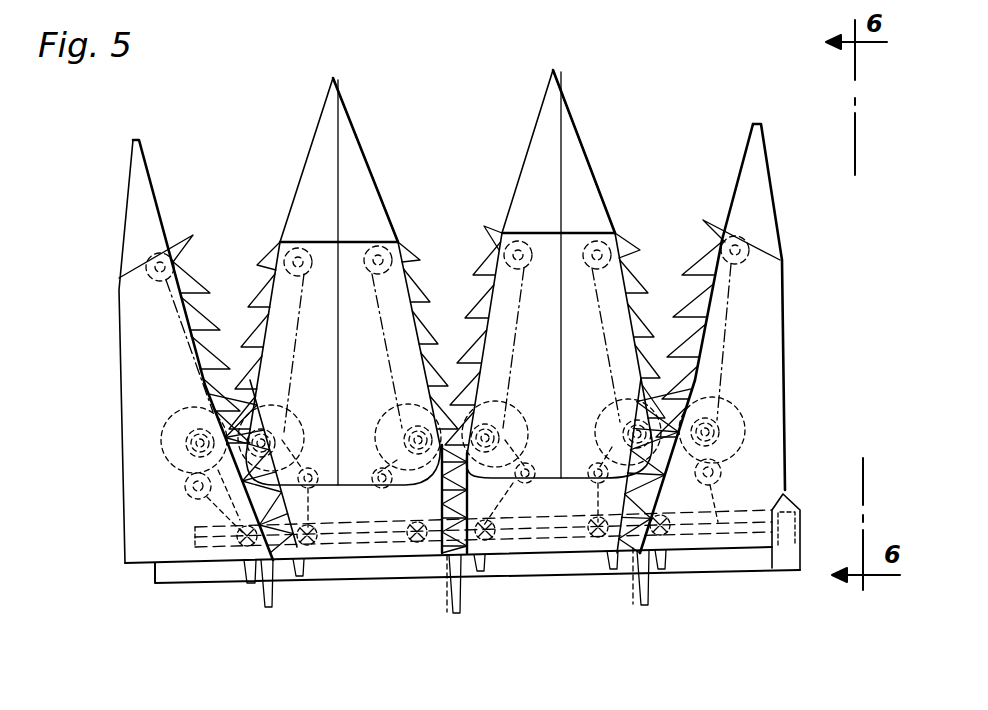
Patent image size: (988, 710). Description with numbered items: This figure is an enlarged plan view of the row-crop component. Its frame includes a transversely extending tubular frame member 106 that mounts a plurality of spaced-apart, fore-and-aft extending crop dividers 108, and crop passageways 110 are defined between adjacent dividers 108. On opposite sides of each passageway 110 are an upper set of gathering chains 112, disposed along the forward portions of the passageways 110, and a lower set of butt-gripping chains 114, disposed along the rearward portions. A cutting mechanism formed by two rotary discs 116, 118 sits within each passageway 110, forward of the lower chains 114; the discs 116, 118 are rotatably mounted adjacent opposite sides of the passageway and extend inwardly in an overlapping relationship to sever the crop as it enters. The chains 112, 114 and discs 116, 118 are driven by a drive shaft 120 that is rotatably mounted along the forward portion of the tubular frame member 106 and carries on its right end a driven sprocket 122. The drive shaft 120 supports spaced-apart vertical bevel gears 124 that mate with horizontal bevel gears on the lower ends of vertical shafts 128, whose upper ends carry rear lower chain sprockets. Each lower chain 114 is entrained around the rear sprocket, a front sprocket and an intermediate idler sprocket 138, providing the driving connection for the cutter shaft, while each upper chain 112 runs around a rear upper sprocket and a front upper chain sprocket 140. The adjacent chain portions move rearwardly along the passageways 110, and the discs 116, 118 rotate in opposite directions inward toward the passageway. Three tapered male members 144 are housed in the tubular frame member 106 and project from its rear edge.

The tubular frame member 106 is at (205, 586).
The crop dividers 108 is at (772, 378).
The crop passageways 110 is at (226, 214).
The upper gathering chains 112 is at (258, 296).
The lower butt-gripping chains 114 is at (646, 497).
The rotary disc 116 is at (286, 428).
The rotary disc 118 is at (183, 426).
The drive shaft 120 is at (720, 540).
The driven sprocket 122 is at (800, 510).
The vertical bevel gears 124 is at (578, 553).
The vertical shafts 128 is at (602, 553).
The intermediate idler sprocket 138 is at (186, 490).
The front upper chain sprocket 140 is at (292, 240).
The male member 144 is at (648, 596).